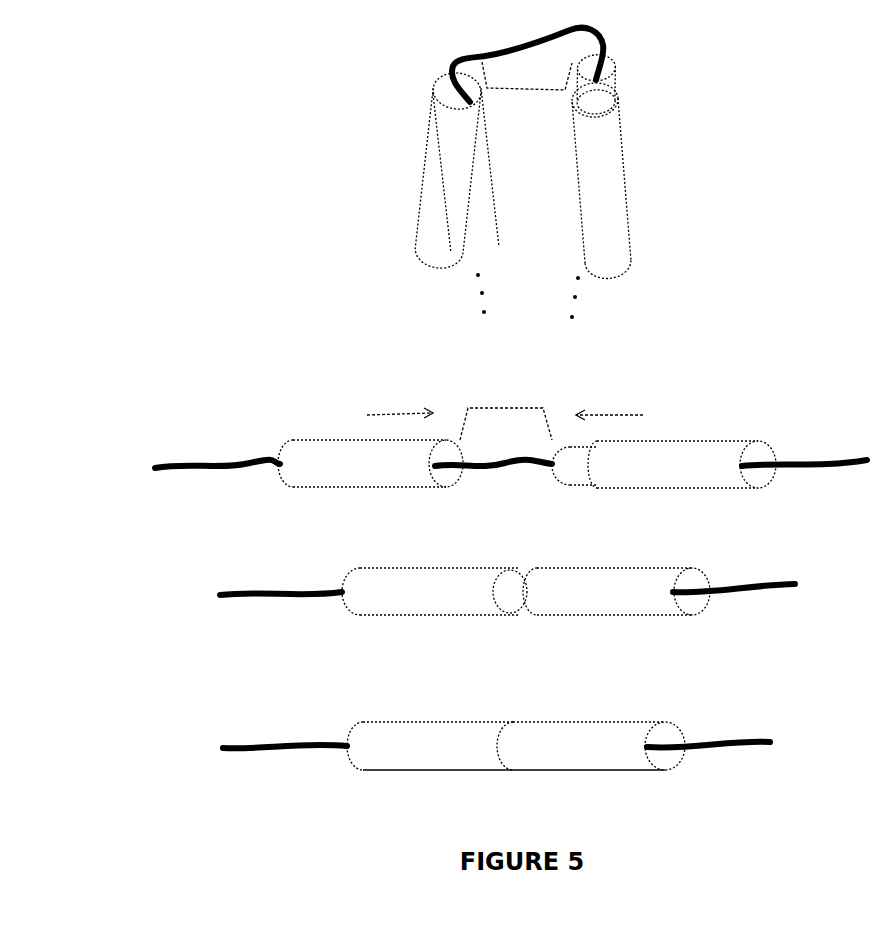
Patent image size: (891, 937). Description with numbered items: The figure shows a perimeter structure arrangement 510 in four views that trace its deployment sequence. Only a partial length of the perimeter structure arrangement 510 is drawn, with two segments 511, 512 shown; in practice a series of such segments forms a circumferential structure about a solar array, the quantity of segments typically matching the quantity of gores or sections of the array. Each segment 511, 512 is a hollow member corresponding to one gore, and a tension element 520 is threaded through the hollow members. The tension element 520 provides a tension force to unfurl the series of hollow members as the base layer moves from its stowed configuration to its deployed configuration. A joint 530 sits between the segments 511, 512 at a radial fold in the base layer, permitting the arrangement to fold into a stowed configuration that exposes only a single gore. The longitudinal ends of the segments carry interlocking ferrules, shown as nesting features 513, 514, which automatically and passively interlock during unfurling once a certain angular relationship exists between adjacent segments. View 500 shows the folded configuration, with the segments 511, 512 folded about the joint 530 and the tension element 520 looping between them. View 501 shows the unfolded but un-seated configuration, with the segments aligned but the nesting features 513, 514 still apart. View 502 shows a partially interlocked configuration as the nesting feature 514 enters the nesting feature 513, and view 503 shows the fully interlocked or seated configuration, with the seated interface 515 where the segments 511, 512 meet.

The view showing a folded configuration 500 is at (148, 82).
The view showing an unfolded but un-seated configuration 501 is at (147, 412).
The view showing a partially interlocked configuration 502 is at (147, 563).
The view showing a fully interlocked or seated configuration 503 is at (150, 715).
The perimeter structure arrangement 510 is at (345, 96).
The segment 511 is at (440, 168).
The segment 512 is at (623, 172).
The nesting feature 513 is at (445, 92).
The nesting feature 514 is at (622, 77).
The mated joint 515 is at (513, 722).
The tension element 520 is at (513, 42).
The joint 530 is at (525, 93).